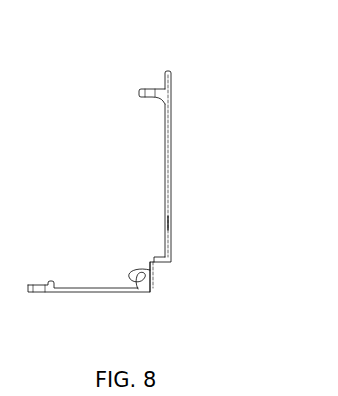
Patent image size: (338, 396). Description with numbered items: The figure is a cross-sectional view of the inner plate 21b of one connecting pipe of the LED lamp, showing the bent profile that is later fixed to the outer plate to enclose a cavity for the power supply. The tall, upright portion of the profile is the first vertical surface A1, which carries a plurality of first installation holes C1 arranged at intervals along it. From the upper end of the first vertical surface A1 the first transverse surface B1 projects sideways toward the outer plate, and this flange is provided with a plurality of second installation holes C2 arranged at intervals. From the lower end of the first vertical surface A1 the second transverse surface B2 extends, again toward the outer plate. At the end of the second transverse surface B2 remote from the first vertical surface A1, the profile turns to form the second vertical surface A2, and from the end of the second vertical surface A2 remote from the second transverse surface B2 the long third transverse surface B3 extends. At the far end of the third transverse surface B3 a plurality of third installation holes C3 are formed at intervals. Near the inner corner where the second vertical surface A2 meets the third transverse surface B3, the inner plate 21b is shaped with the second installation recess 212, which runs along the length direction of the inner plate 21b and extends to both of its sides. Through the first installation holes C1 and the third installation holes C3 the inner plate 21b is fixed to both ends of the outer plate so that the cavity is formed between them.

The inner plate 21b is at (186, 109).
The first vertical surface A1 is at (171, 175).
The first installation holes C1 is at (171, 222).
The first transverse surface B1 is at (143, 89).
The second installation holes C2 is at (154, 89).
The second transverse surface B2 is at (149, 258).
The second vertical surface A2 is at (150, 276).
The second installation recess 212 is at (138, 284).
The third transverse surface B3 is at (73, 288).
The third installation holes C3 is at (38, 285).